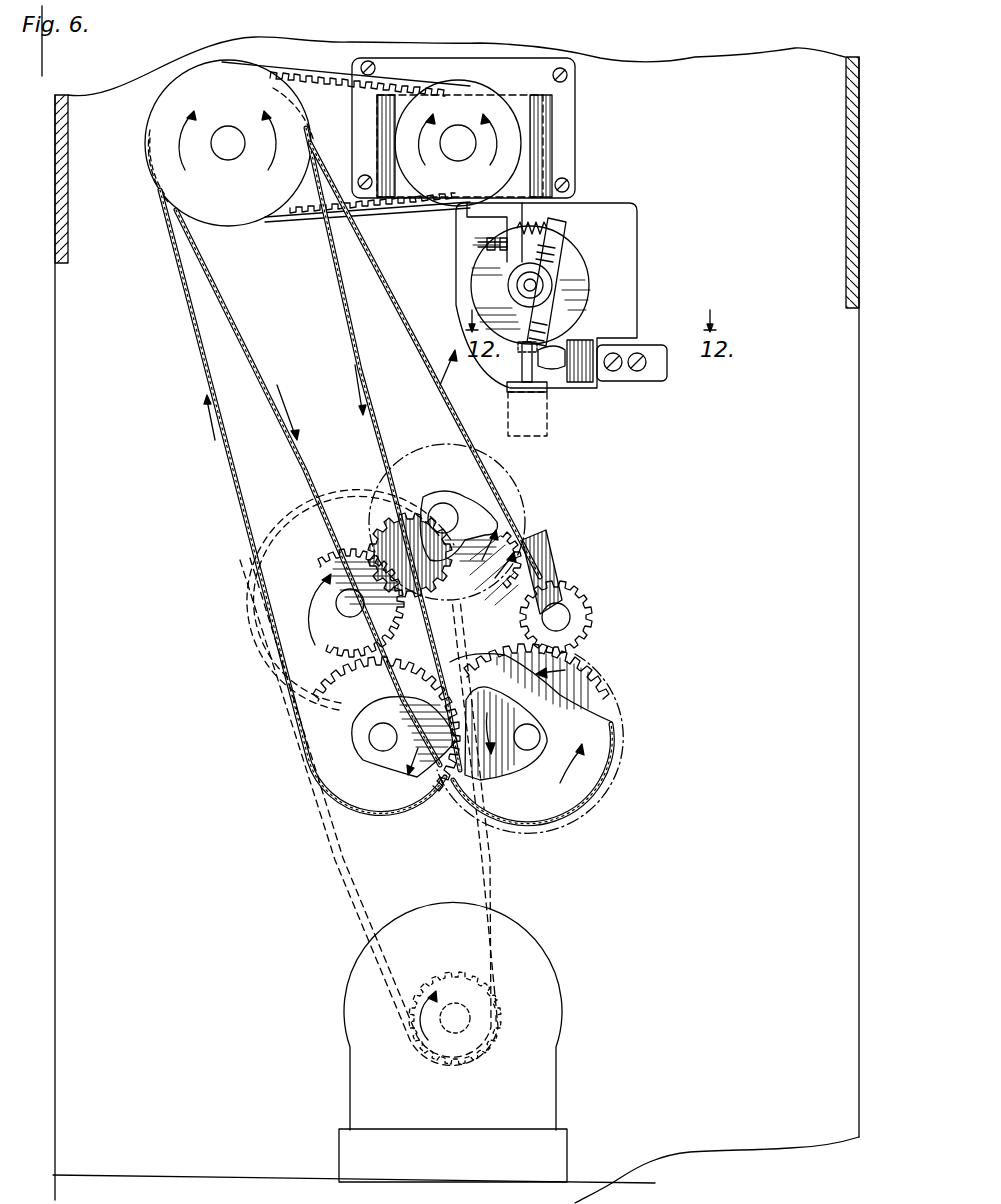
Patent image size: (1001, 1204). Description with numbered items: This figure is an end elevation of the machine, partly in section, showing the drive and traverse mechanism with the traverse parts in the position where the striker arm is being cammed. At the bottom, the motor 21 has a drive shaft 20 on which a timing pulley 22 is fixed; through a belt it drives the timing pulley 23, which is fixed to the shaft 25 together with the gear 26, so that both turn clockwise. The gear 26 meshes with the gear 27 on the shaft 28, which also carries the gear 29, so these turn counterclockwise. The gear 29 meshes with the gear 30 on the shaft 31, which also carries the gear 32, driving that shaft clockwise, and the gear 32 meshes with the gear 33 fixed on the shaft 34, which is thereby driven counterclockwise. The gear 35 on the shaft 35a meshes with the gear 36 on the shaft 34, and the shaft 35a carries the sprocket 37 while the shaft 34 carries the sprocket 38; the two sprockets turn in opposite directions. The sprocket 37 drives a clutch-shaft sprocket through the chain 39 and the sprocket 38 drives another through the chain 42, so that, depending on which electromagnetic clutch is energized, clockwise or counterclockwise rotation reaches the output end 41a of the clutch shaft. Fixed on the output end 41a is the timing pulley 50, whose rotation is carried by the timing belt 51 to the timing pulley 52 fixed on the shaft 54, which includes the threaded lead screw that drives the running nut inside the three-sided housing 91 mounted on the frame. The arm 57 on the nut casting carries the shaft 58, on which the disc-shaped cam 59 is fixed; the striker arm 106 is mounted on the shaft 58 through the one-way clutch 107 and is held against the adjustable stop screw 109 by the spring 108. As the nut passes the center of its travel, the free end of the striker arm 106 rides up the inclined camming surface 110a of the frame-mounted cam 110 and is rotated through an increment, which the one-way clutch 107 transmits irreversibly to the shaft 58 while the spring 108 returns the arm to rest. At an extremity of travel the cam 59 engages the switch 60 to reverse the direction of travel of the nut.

The output end of the clutch shaft 41a is at (232, 137).
The timing pulley 50 is at (234, 214).
The timing belt 51 is at (305, 225).
The timing pulley 52 is at (532, 86).
The shaft 54 is at (478, 115).
The three-sided housing 91 is at (535, 138).
The spring 108 is at (546, 229).
The stop screw 109 is at (480, 243).
The arm 57 is at (510, 258).
The one-way clutch 107 is at (503, 283).
The shaft 58 is at (534, 281).
The cam 59 is at (576, 290).
The striker arm 106 is at (549, 343).
The switch 60 is at (538, 410).
The cam 110 is at (685, 326).
The camming surface 110a is at (586, 366).
The chain 42 is at (203, 352).
The chain 39 is at (260, 378).
The timing pulley 23 is at (253, 612).
The gear 26 is at (326, 560).
The shaft 25 is at (358, 612).
The gear 27 is at (380, 526).
The shaft 28 is at (446, 510).
The gear 29 is at (482, 520).
The gear 30 is at (545, 544).
The shaft 31 is at (557, 617).
The gear 32 is at (588, 646).
The gear 33 is at (585, 690).
The shaft 34 is at (530, 735).
The gear 35 is at (447, 790).
The shaft 35a is at (383, 740).
The gear 36 is at (498, 773).
The sprocket 37 is at (342, 750).
The sprocket 38 is at (561, 796).
The motor 21 is at (540, 970).
The timing pulley 22 is at (428, 1043).
The drive shaft 20 is at (455, 1030).